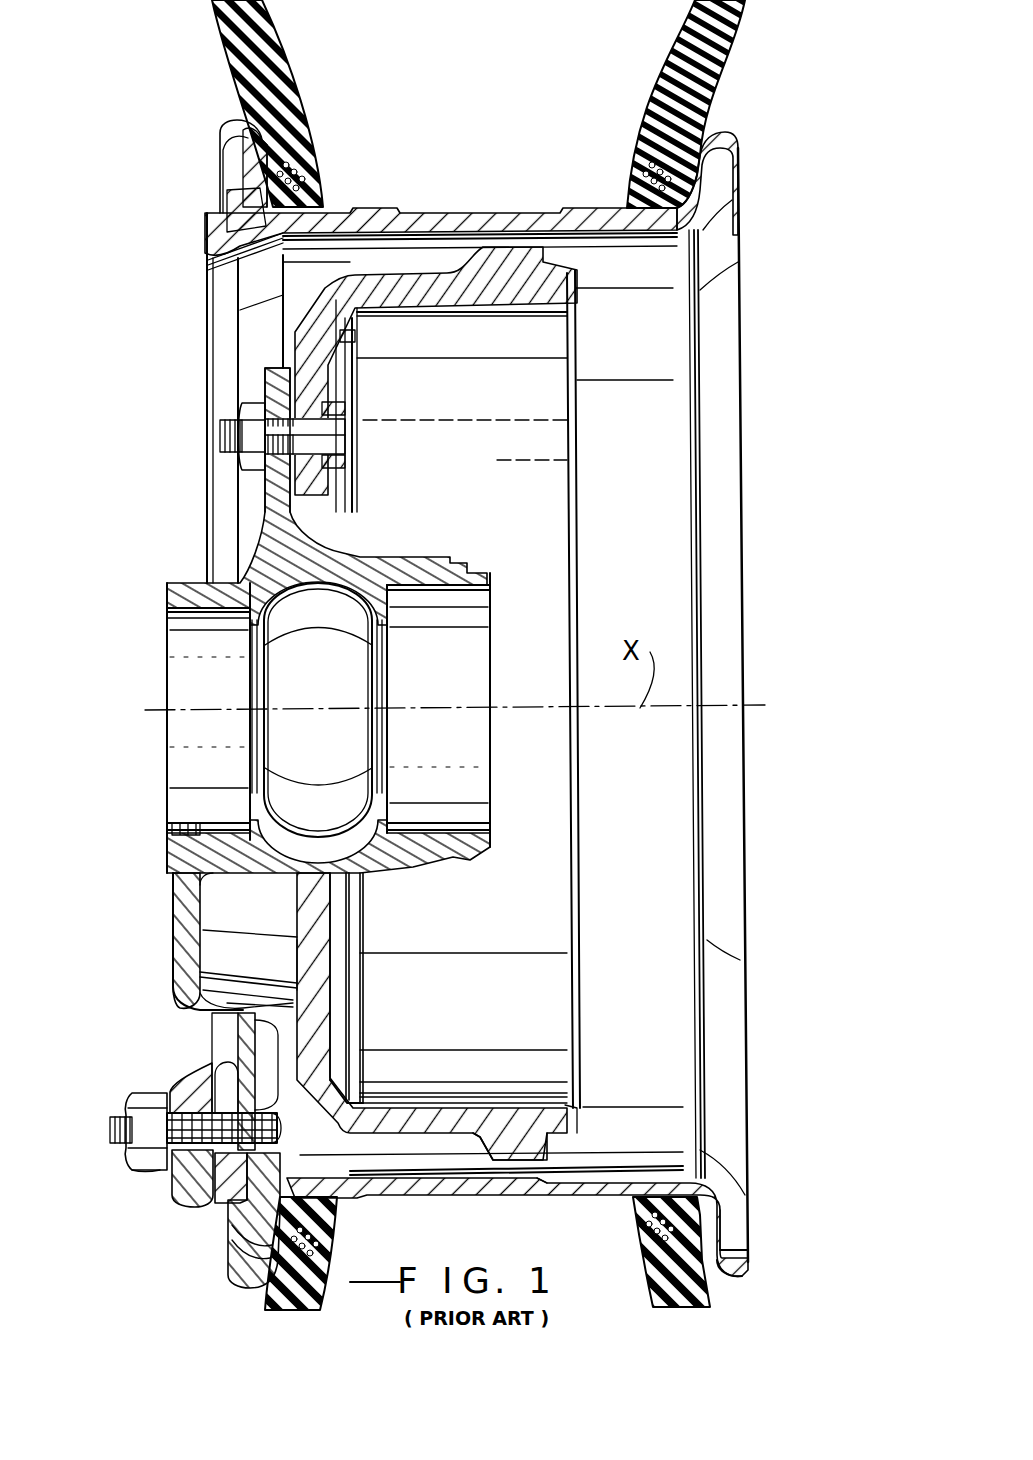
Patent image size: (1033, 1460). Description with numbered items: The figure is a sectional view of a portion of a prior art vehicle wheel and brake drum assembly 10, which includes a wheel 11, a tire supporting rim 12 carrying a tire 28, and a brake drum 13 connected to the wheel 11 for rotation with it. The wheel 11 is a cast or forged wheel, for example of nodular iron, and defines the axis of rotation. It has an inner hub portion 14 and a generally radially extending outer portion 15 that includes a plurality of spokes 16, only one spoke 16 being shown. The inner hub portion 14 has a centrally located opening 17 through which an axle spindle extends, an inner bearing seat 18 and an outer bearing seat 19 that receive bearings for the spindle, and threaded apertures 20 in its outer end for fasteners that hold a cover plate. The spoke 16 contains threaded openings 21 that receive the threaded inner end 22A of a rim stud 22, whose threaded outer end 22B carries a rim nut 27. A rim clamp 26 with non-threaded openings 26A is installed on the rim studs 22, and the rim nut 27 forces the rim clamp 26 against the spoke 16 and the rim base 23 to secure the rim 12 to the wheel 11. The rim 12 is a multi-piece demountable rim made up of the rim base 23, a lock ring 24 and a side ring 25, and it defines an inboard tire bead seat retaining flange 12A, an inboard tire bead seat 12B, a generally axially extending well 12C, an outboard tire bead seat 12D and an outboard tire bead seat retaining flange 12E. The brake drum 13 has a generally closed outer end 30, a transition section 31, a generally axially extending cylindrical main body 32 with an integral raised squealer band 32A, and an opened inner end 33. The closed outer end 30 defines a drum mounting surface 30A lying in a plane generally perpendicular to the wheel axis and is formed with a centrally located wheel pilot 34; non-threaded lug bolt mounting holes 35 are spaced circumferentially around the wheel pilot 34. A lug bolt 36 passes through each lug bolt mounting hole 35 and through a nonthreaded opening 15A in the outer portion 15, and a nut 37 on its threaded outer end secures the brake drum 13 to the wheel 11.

The wheel assembly 10 is at (186, 430).
The wheel 11 is at (166, 892).
The tire supporting rim 12 is at (466, 722).
The inboard tire bead seat retaining flange 12A is at (657, 1275).
The inboard tire bead seat 12B is at (614, 1198).
The well 12C is at (453, 1198).
The outboard tire bead seat 12D is at (335, 1210).
The outboard tire bead seat retaining flange 12E is at (257, 1292).
The brake drum 13 is at (405, 1098).
The inner hub portion 14 is at (415, 868).
The outer portion 15 is at (292, 512).
The nonthreaded opening 15A is at (300, 436).
The spoke 16 is at (176, 1000).
The centrally located opening 17 is at (470, 654).
The inner bearing seat 18 is at (428, 835).
The outer bearing seat 19 is at (197, 800).
The threaded aperture 20 is at (172, 830).
The threaded opening 21 is at (281, 1122).
The rim stud 22 is at (220, 1118).
The threaded inner end 22A is at (282, 1142).
The threaded outer end 22B is at (117, 1115).
The rim base 23 is at (565, 1172).
The lock ring 24 is at (228, 1216).
The side ring 25 is at (228, 1272).
The rim clamp 26 is at (180, 1190).
The non-threaded opening 26A is at (162, 1118).
The rim nut 27 is at (143, 1168).
The tire 28 is at (300, 70).
The closed outer end 30 is at (295, 931).
The drum mounting surface 30A is at (295, 966).
The transition section 31 is at (348, 1083).
The cylindrical main body 32 is at (480, 1110).
The squealer band 32A is at (519, 1162).
The opened inner end 33 is at (583, 1108).
The wheel pilot 34 is at (345, 468).
The lug bolt mounting hole 35 is at (345, 410).
The lug bolt 36 is at (355, 338).
The nut 37 is at (242, 463).